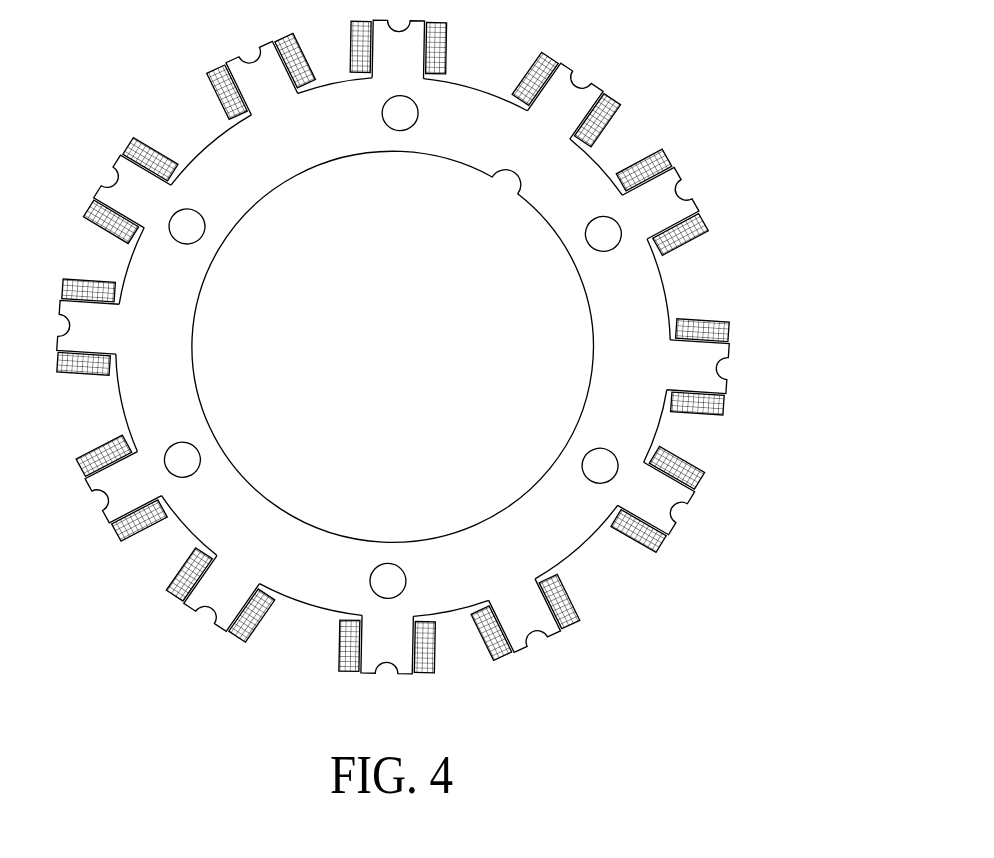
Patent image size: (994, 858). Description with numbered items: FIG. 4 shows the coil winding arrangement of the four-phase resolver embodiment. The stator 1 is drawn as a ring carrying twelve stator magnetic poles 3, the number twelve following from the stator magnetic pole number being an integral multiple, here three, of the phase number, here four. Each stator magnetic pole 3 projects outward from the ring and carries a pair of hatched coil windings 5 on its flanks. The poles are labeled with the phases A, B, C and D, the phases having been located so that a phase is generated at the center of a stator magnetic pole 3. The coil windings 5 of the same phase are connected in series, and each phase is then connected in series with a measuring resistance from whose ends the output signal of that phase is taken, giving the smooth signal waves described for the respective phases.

The stator core 1 is at (540, 540).
The stator magnetic pole 3 is at (722, 365).
The coil winding 5 is at (703, 473).